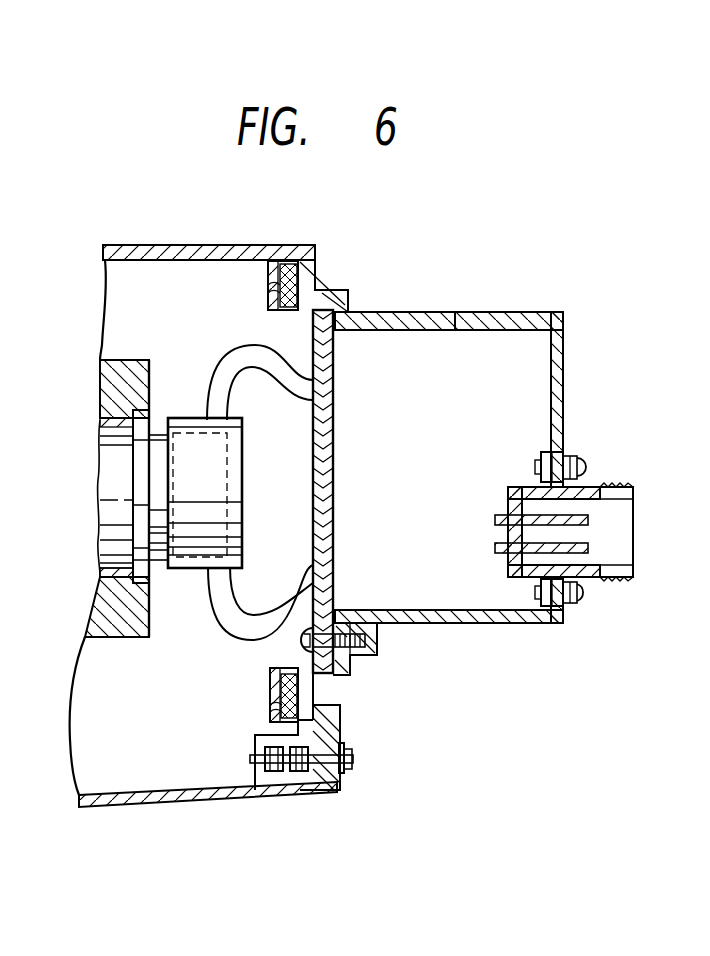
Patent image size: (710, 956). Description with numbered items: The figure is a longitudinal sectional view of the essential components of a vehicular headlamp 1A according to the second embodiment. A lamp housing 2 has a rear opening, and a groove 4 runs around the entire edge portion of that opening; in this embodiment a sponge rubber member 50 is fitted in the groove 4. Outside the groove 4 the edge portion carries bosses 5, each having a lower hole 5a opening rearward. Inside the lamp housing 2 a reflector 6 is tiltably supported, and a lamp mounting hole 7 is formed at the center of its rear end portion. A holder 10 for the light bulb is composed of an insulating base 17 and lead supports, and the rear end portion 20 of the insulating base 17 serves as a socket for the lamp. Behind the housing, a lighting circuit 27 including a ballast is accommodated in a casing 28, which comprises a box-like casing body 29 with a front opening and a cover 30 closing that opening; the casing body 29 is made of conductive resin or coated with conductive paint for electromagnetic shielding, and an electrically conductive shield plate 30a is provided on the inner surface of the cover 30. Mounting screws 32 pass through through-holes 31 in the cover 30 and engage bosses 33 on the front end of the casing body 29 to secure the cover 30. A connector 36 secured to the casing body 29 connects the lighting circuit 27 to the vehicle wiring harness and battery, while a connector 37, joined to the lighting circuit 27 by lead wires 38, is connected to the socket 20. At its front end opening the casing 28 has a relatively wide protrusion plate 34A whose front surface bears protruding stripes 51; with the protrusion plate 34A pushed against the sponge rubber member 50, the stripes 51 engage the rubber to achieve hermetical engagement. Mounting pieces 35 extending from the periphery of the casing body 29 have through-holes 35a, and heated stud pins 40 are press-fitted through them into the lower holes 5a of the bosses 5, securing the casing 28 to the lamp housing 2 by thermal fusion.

The vehicular headlamp 1A is at (428, 219).
The lamp housing 2 is at (150, 246).
The groove 4 is at (287, 262).
The boss 5 is at (268, 768).
The lower hole 5a is at (292, 776).
The reflector 6 is at (118, 362).
The lamp mounting hole 7 is at (105, 572).
The holder 10 is at (85, 482).
The insulating base 17 is at (102, 445).
The rear end portion of the insulating base 20 is at (160, 435).
The lighting circuit 27 is at (530, 312).
The casing 28 is at (472, 312).
The casing body 29 is at (415, 312).
The cover 30 is at (313, 472).
The electrically conductive shield plate 30a is at (333, 470).
The through-hole 31 is at (355, 632).
The mounting screw 32 is at (298, 642).
The boss 33 is at (372, 650).
The protrusion plate 34A is at (297, 311).
The mounting piece 35 is at (341, 790).
The through-hole 35a is at (338, 762).
The connector 36 is at (511, 487).
The connector 37 is at (200, 568).
The lead wires 38 is at (252, 368).
The stud pin 40 is at (353, 758).
The sponge rubber member 50 is at (298, 266).
The protruding stripes 51 is at (278, 296).